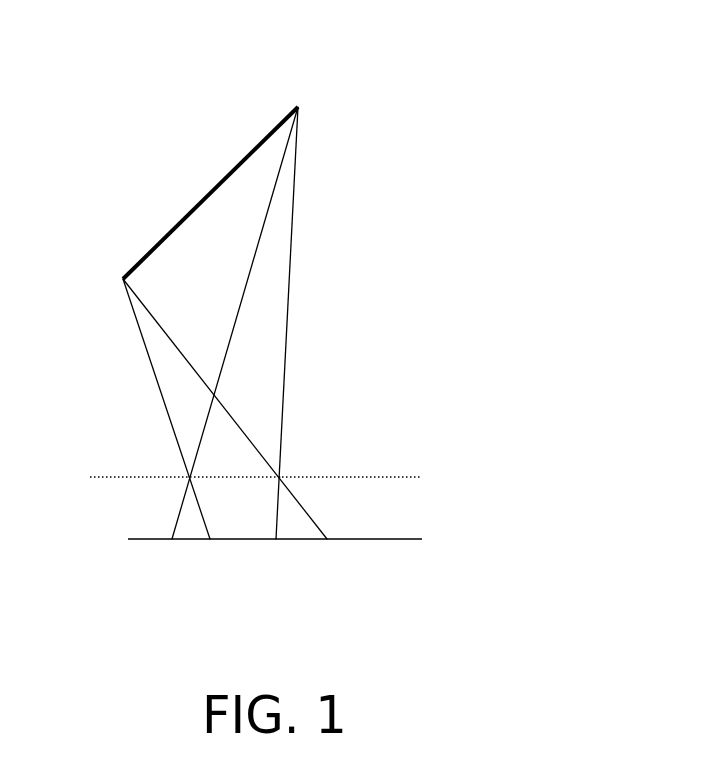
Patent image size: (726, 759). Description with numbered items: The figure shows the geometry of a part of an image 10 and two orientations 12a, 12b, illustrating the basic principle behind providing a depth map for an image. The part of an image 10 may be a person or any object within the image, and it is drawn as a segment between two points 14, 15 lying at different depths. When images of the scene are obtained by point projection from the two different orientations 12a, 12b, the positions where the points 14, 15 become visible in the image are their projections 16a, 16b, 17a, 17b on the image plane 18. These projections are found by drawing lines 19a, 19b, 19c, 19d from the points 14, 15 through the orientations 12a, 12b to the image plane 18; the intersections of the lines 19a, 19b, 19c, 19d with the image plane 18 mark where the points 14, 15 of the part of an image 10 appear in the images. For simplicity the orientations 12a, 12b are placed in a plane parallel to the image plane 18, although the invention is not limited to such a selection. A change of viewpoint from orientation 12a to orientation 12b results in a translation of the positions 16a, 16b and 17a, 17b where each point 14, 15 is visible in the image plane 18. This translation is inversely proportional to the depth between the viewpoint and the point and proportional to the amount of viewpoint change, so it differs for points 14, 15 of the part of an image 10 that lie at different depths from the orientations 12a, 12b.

The part of an image 10 is at (210, 192).
The point on the part of an image 14 is at (121, 278).
The point on the part of an image 15 is at (298, 104).
The line 19a is at (151, 362).
The line 19b is at (137, 292).
The line 19c is at (281, 168).
The line 19d is at (292, 236).
The orientation 12a is at (186, 475).
The orientation 12b is at (284, 475).
The projection 16a is at (172, 541).
The projection 17a is at (210, 541).
The projection 16b is at (276, 541).
The projection 17b is at (327, 541).
The image plane 18 is at (388, 541).